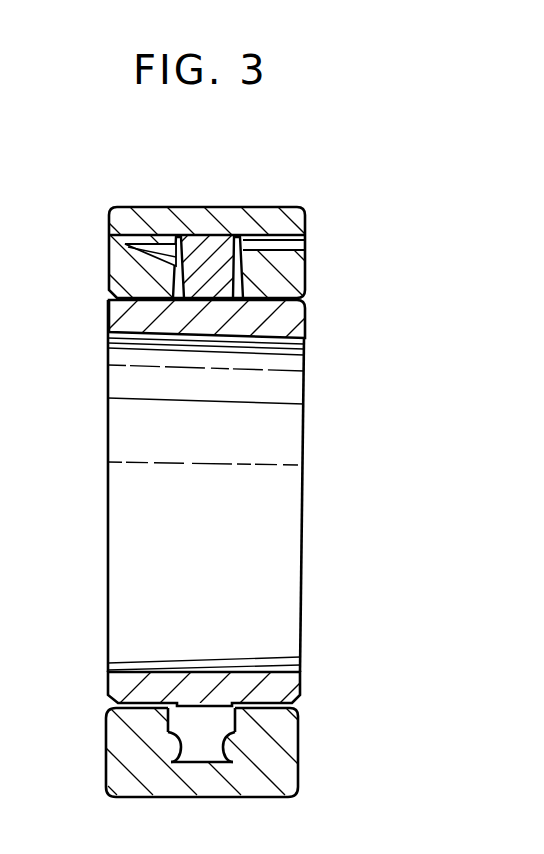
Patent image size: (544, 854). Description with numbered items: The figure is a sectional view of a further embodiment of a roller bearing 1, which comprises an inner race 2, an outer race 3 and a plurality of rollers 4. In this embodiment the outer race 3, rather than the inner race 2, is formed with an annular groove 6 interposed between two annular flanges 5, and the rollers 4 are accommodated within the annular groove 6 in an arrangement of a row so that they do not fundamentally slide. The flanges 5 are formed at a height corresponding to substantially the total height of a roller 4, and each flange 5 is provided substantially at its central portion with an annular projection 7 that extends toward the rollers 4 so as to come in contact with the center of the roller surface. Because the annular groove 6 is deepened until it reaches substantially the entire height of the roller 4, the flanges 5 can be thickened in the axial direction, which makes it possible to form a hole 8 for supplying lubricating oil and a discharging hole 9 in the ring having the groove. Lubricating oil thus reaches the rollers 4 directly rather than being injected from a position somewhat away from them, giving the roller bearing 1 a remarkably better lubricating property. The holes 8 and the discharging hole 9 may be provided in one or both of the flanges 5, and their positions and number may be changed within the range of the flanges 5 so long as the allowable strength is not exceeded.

The roller bearing 1 is at (311, 200).
The inner race 2 is at (305, 327).
The outer race 3 is at (305, 222).
The rollers 4 is at (208, 258).
The annular flanges 5 is at (161, 267).
The annular groove 6 is at (205, 730).
The annular projection 7 is at (183, 762).
The hole for supplying lubricating oil 8 is at (132, 243).
The discharging hole 9 is at (305, 250).